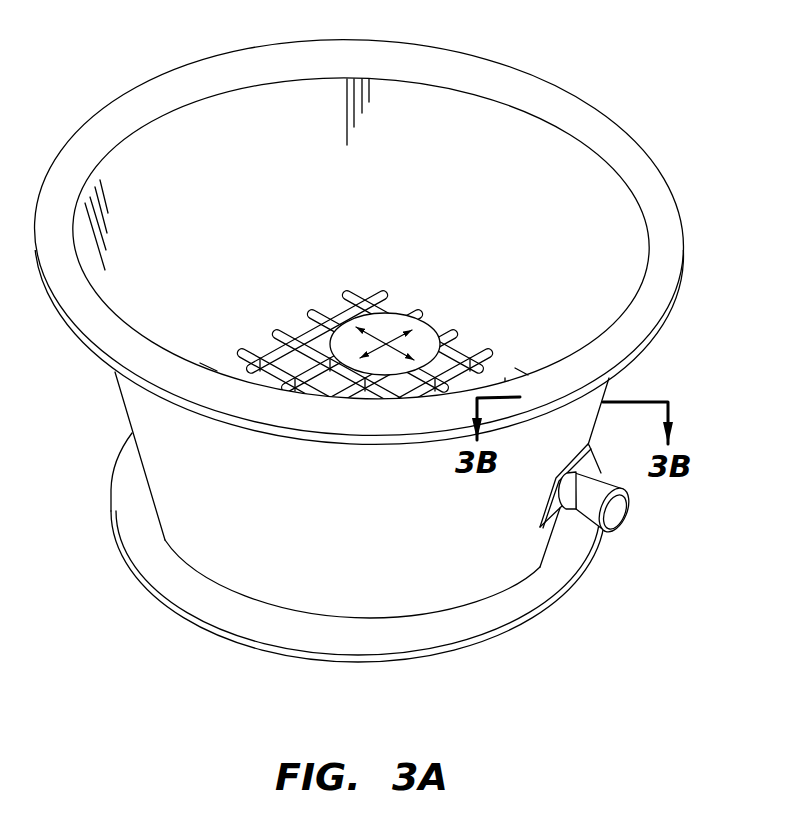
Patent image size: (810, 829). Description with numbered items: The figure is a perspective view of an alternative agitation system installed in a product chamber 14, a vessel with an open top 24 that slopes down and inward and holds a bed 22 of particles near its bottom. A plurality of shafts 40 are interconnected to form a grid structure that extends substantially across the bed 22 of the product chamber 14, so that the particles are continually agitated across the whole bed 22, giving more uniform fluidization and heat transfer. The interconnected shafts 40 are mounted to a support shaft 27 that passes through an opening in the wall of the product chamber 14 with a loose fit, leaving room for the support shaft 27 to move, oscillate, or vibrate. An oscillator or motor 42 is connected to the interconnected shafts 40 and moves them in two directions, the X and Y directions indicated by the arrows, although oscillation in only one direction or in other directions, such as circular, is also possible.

The product chamber 14 is at (143, 417).
The bed 22 is at (448, 214).
The open top 24 is at (412, 128).
The support shaft 27 is at (582, 415).
The shafts 40 is at (265, 347).
The oscillator or motor 42 is at (618, 520).